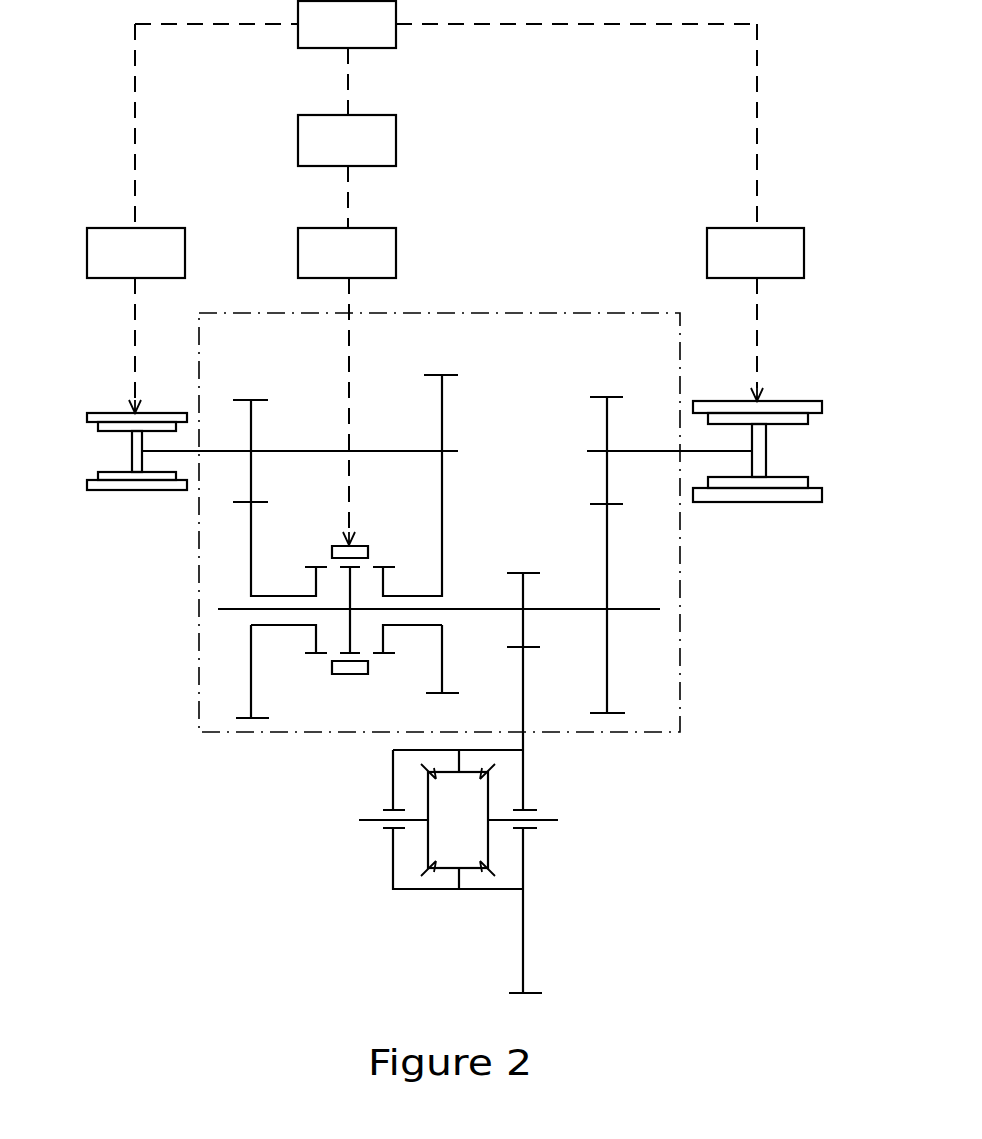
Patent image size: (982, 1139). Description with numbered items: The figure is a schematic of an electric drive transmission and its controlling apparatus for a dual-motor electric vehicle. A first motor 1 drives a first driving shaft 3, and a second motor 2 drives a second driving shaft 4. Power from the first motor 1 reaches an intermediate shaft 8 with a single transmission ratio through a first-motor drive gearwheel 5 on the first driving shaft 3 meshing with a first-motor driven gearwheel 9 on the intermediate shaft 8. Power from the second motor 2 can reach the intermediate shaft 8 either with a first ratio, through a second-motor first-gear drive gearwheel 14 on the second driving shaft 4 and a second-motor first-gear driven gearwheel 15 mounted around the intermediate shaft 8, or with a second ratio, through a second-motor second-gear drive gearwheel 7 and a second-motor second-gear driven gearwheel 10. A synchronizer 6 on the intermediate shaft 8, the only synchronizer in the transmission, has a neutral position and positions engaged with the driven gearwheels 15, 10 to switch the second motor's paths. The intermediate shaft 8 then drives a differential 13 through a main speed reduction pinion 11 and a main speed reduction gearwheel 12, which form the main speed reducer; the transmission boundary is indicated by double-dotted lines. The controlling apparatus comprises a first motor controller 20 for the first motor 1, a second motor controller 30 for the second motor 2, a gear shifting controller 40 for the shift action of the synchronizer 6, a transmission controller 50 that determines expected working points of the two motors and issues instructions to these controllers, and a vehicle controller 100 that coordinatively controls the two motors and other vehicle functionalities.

The first motor 1 is at (802, 400).
The second motor 2 is at (99, 412).
The first driving shaft 3 is at (658, 452).
The second driving shaft 4 is at (226, 453).
The first-motor drive gearwheel 5 is at (601, 394).
The synchronizer 6 is at (322, 519).
The second-motor second-gear drive gearwheel 7 is at (435, 373).
The intermediate shaft 8 is at (642, 612).
The first-motor driven gearwheel 9 is at (610, 548).
The second-motor second-gear driven gearwheel 10 is at (443, 652).
The main speed reduction pinion 11 is at (522, 592).
The main speed reduction gearwheel 12 is at (527, 940).
The differential 13 is at (392, 779).
The second-motor first-gear drive gearwheel 14 is at (245, 399).
The second-motor first-gear driven gearwheel 15 is at (253, 668).
The first motor controller 20 is at (755, 253).
The second motor controller 30 is at (136, 253).
The gear shifting controller 40 is at (347, 253).
The transmission controller 50 is at (347, 140).
The vehicle controller 100 is at (347, 24).